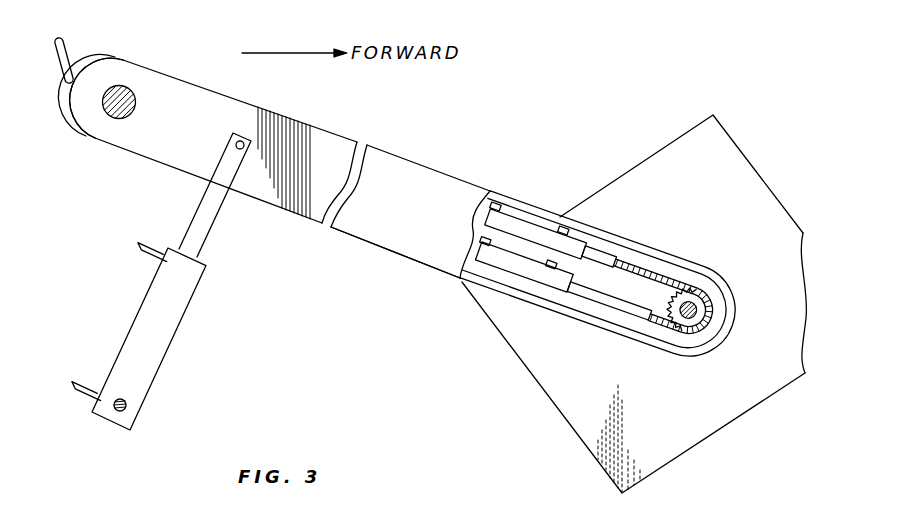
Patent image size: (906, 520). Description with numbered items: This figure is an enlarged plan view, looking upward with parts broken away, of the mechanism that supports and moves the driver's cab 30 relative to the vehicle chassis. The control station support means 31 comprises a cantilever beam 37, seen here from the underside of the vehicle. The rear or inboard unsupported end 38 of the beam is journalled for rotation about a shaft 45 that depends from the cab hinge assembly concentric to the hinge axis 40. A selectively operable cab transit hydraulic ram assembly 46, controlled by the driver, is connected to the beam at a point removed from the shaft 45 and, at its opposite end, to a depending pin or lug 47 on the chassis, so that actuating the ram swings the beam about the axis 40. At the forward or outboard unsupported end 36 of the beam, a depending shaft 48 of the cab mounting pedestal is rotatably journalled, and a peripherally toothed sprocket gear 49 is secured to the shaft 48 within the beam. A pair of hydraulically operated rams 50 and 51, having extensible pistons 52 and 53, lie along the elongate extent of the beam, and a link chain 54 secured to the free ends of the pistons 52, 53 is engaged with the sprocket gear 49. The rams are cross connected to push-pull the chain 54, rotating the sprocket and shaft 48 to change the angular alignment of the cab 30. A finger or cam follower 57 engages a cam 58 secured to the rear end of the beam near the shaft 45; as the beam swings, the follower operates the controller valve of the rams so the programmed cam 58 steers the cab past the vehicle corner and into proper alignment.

The driver's control station or cab 30 is at (632, 168).
The control station support means 31 is at (395, 147).
The forward or outboard unsupported end 36 is at (727, 292).
The cantilever beam 37 is at (368, 218).
The rear or inboard unsupported end 38 is at (118, 68).
The axis 40 is at (128, 90).
The shaft 45 is at (100, 128).
The cab transit hydraulic ram assembly 46 is at (170, 312).
The depending pin or lug 47 is at (126, 402).
The depending shaft 48 is at (697, 313).
The sprocket gear 49 is at (680, 293).
The hydraulically operated ram 50 is at (548, 237).
The hydraulically operated ram 51 is at (560, 287).
The extensible piston 52 is at (600, 257).
The extensible piston 53 is at (610, 303).
The link chain 54 is at (640, 265).
The finger or cam follower 57 is at (69, 54).
The cam 58 is at (71, 117).